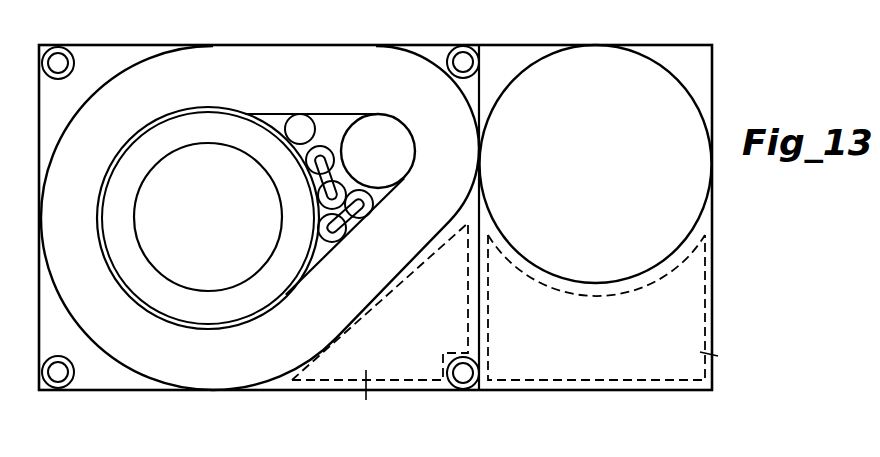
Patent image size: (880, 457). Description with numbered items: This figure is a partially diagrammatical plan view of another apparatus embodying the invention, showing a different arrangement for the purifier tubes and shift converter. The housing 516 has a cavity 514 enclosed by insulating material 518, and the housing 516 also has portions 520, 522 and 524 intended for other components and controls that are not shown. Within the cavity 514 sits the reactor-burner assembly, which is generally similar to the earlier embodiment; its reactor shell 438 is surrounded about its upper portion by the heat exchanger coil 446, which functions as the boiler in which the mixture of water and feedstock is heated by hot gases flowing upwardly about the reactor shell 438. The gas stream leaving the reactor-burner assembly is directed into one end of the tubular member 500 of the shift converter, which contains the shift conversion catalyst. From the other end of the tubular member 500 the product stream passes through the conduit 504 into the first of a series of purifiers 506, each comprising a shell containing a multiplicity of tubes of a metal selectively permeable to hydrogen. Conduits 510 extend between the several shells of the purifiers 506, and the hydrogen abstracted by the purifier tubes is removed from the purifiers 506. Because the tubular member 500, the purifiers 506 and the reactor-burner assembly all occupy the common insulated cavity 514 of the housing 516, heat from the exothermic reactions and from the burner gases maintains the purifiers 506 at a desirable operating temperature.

The reactor shell 438 is at (180, 162).
The heat exchanger coil 446 is at (225, 123).
The tubular member 500 is at (402, 135).
The conduit 504 is at (368, 190).
The purifier 506 is at (353, 229).
The conduit 510 is at (322, 178).
The cavity 514 is at (327, 113).
The housing 516 is at (429, 399).
The insulating material 518 is at (393, 63).
The portion 520 is at (700, 187).
The portion 522 is at (700, 354).
The portion 524 is at (365, 403).